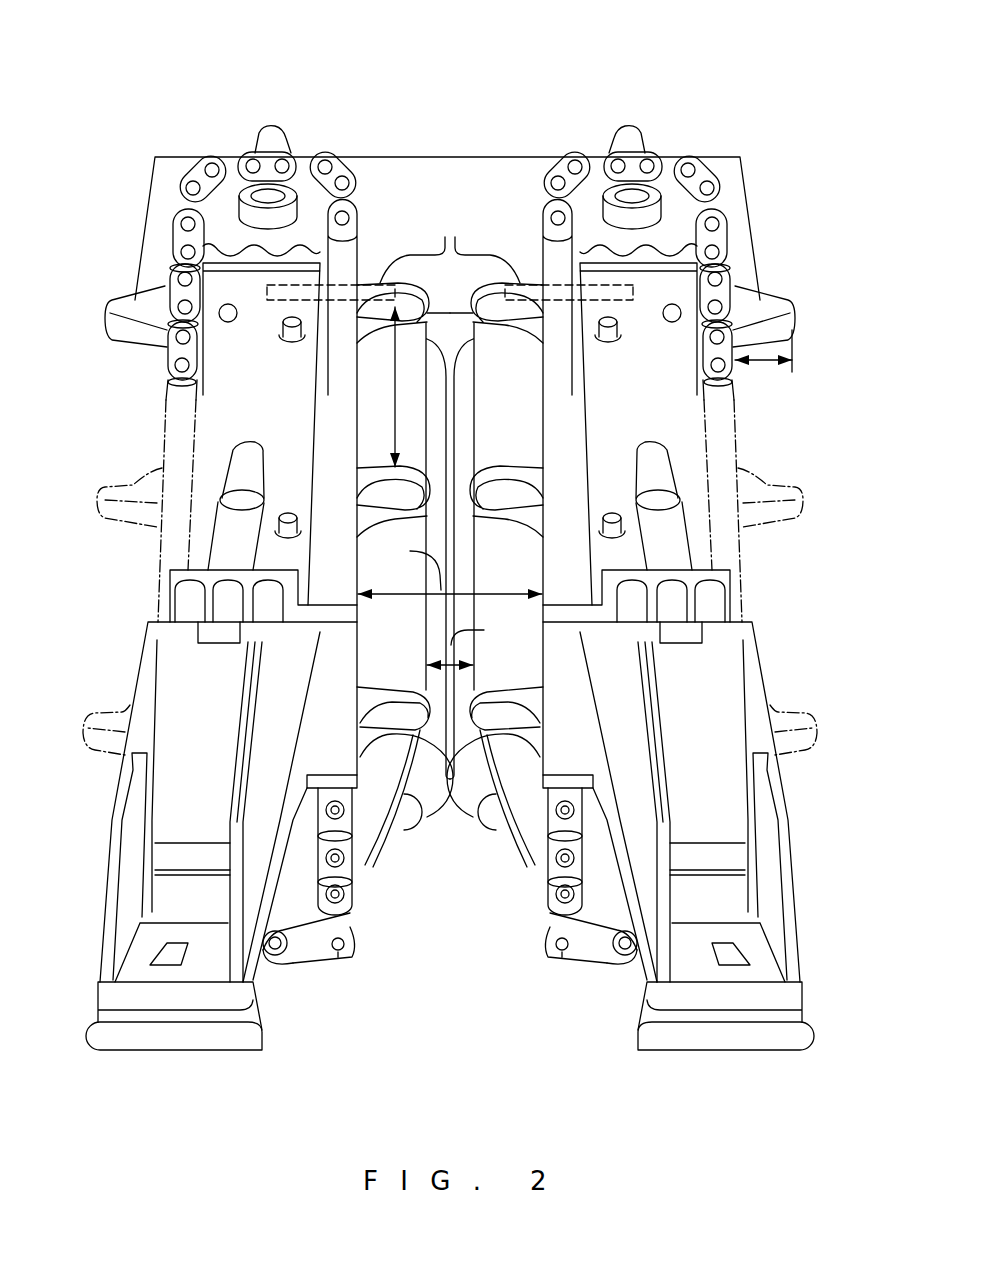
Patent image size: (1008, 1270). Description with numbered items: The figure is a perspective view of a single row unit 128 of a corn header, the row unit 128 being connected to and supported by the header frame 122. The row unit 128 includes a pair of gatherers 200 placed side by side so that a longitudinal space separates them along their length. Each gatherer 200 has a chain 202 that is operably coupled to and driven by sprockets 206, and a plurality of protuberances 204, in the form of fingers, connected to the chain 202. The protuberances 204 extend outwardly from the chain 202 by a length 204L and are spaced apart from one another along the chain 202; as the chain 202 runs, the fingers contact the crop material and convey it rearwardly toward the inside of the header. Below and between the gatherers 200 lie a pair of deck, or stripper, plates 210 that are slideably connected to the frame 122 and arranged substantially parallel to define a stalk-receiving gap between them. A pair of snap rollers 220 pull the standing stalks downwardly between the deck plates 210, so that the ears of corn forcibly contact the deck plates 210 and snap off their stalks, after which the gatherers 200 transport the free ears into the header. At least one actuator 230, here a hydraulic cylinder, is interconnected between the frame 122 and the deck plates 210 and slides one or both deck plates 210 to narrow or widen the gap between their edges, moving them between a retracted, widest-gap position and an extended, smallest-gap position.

The row unit 128 is at (523, 108).
The header frame 122 is at (393, 172).
The gatherer 200 is at (135, 415).
The chain 202 is at (178, 212).
The protuberance 204 is at (118, 300).
The length 204L is at (763, 365).
The sprocket 206 is at (230, 200).
The deck plate 210 is at (365, 830).
The snap roller 220 is at (391, 865).
The actuator 230 is at (450, 494).